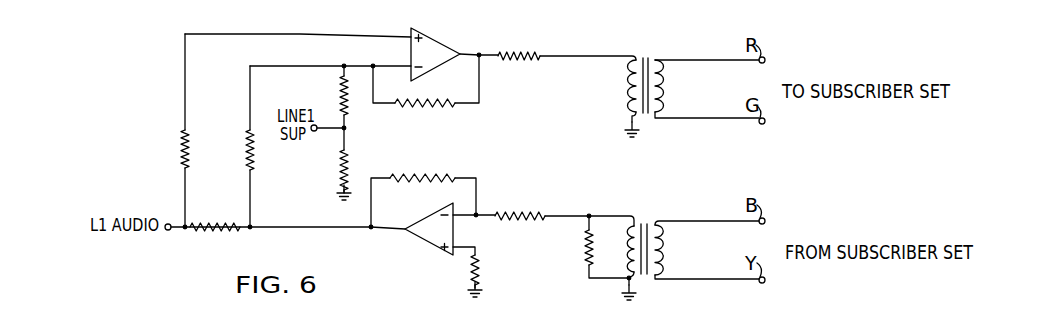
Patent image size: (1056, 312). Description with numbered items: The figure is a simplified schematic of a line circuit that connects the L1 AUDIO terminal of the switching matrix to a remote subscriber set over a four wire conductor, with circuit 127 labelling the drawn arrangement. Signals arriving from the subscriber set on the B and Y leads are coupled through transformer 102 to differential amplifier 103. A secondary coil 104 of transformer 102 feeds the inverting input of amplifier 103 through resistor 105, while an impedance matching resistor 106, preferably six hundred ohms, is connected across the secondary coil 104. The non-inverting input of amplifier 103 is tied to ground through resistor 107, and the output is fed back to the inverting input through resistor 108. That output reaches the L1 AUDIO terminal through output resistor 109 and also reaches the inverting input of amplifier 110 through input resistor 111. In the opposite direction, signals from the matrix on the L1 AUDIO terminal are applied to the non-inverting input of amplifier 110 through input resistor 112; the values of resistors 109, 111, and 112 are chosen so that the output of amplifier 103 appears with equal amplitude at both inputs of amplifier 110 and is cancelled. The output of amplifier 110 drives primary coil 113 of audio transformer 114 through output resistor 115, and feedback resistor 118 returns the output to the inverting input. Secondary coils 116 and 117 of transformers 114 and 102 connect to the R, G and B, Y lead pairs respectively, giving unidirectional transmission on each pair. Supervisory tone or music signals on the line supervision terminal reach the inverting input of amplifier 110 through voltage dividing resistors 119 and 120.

The transformer 102 is at (672, 239).
The differential amplifier 103 is at (427, 250).
The secondary coil 104 is at (627, 270).
The resistor 105 is at (525, 212).
The impedance matching resistor 106 is at (586, 248).
The resistor 107 is at (478, 270).
The resistor 108 is at (432, 178).
The output resistor 109 is at (224, 222).
The amplifier 110 is at (441, 16).
The input resistor 111 is at (246, 148).
The input resistor 112 is at (190, 140).
The primary coil 113 is at (631, 85).
The audio transformer 114 is at (678, 74).
The output resistor 115 is at (522, 50).
The secondary coil 116 is at (664, 100).
The secondary coil 117 is at (663, 262).
The feedback resistor 118 is at (432, 105).
The voltage dividing resistor 119 is at (340, 95).
The voltage dividing resistor 120 is at (341, 163).
The hybrid circuit 127 is at (966, 311).